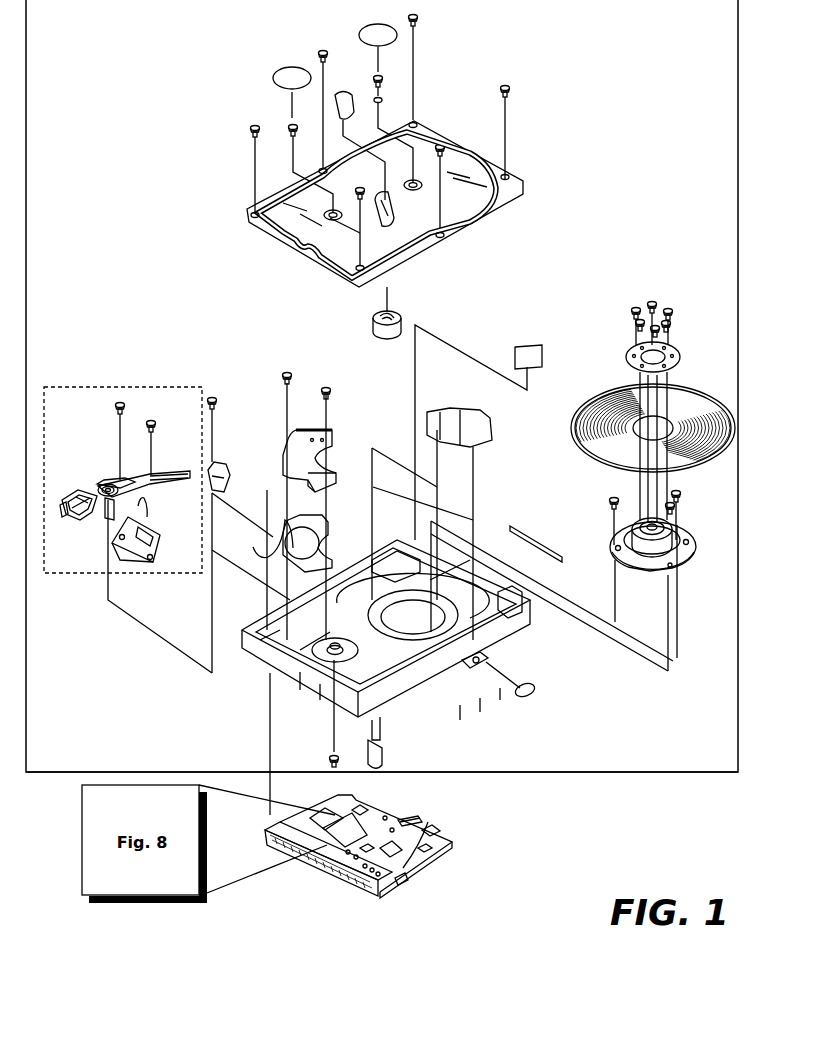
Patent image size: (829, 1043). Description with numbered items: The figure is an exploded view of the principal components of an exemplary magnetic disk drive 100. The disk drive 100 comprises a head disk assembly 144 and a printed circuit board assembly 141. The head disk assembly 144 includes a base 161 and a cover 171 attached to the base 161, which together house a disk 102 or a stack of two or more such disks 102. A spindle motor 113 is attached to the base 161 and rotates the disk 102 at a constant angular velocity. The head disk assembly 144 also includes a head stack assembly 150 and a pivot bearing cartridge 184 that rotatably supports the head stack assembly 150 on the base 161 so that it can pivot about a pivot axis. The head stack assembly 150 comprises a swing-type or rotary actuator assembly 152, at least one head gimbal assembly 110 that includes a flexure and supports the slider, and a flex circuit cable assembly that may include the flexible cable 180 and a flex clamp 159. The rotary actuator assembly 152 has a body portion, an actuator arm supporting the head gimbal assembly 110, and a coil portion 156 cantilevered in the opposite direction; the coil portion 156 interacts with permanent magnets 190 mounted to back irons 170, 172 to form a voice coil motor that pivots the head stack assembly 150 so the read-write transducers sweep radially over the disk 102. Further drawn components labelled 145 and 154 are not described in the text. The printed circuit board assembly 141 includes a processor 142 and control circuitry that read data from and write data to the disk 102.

The magnetic disk drive 100 is at (612, 798).
The disk 102 is at (592, 394).
The head gimbal assembly 110 is at (130, 466).
The spindle motor 113 is at (604, 520).
The printed circuit board assembly 141 is at (405, 866).
The processor 142 is at (352, 827).
The head disk assembly 144 is at (520, 773).
The pivot 145 is at (105, 496).
The head stack assembly 150 is at (92, 387).
The rotary actuator assembly 152 is at (112, 476).
The latch 154 is at (192, 468).
The coil portion 156 is at (50, 513).
The flex clamp 159 is at (160, 535).
The base 161 is at (428, 688).
The back iron 170 is at (287, 456).
The cover 171 is at (492, 210).
The back iron 172 is at (330, 525).
The flexible cable 180 is at (150, 522).
The pivot bearing cartridge 184 is at (82, 484).
The permanent magnets 190 is at (253, 547).